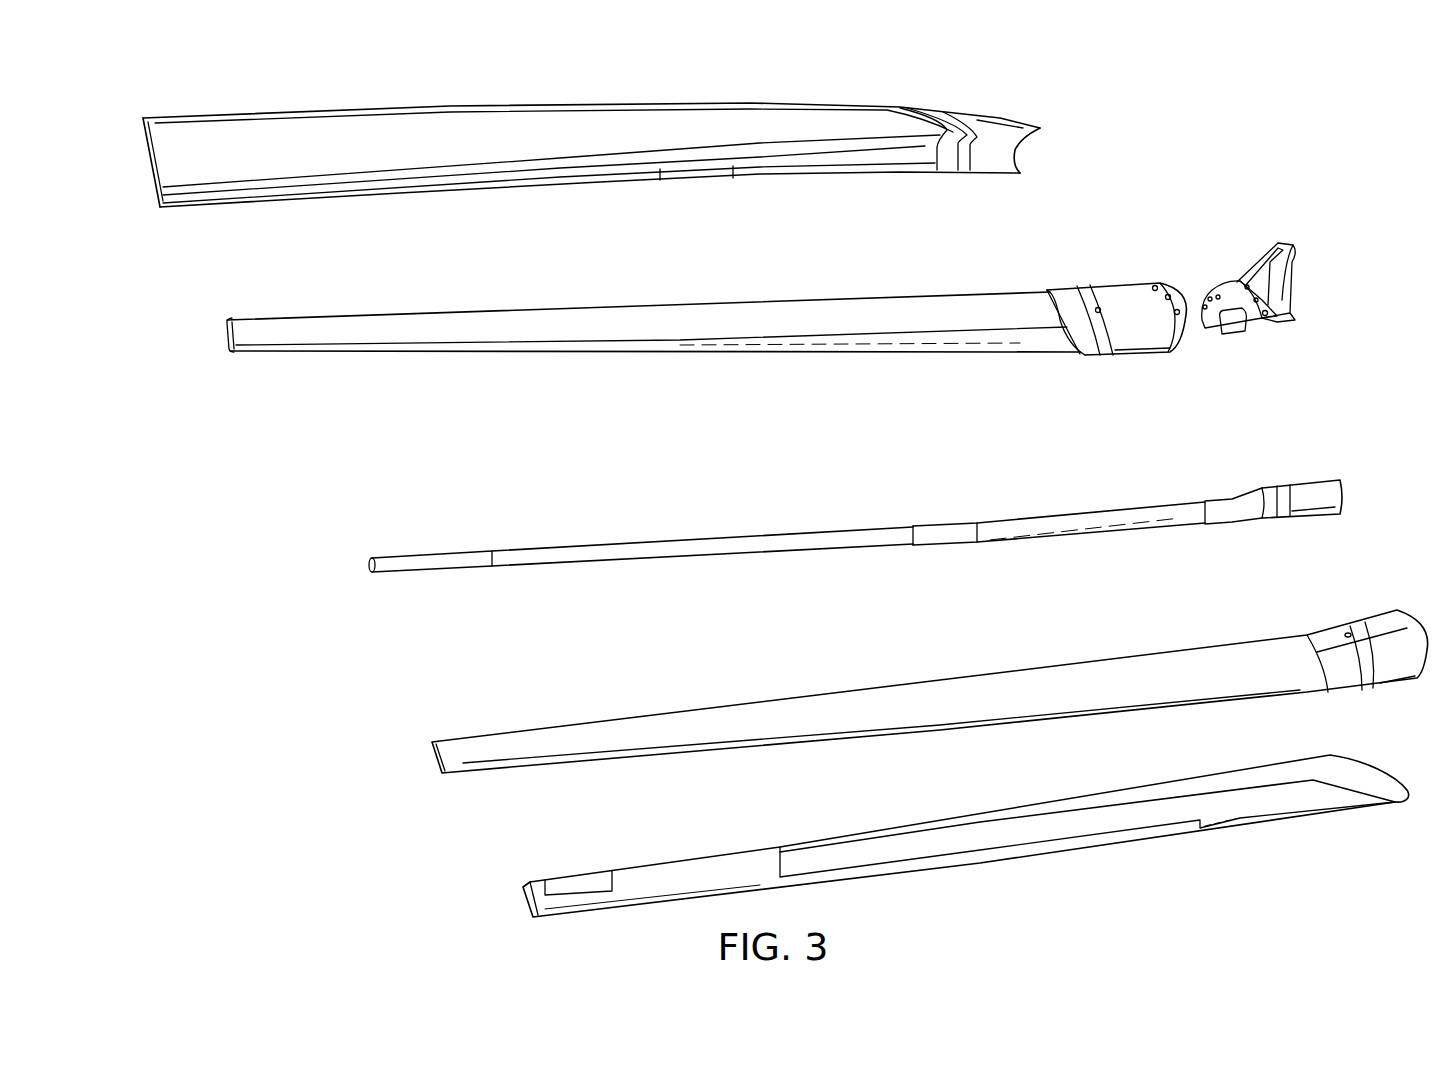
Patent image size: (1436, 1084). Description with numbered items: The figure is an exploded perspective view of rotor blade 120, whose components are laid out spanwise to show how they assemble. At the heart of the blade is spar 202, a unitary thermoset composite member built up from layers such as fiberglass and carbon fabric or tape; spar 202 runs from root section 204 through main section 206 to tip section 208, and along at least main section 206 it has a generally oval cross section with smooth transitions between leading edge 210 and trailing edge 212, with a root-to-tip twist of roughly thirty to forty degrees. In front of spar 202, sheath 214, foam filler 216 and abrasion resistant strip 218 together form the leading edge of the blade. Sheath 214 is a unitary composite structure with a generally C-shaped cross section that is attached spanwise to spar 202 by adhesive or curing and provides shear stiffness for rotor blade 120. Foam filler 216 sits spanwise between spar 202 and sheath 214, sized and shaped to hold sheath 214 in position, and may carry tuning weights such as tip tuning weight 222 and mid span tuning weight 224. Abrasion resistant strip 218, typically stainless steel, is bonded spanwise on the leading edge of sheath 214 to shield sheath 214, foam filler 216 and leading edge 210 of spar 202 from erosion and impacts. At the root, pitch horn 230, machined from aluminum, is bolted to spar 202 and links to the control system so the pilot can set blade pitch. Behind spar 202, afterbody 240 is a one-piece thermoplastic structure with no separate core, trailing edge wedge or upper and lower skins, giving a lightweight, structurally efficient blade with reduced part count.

The rotor blade 120 is at (1229, 104).
The spar 202 is at (498, 328).
The root section 204 is at (1113, 300).
The main section 206 is at (740, 320).
The tip section 208 is at (248, 333).
The leading edge 210 is at (893, 354).
The trailing edge 212 is at (832, 299).
The sheath 214 is at (1025, 680).
The foam filler 216 is at (1097, 510).
The abrasion resistant strip 218 is at (1240, 818).
The tip tuning weight 222 is at (430, 555).
The mid span tuning weight 224 is at (942, 525).
The pitch horn 230 is at (1285, 240).
The afterbody 240 is at (488, 115).